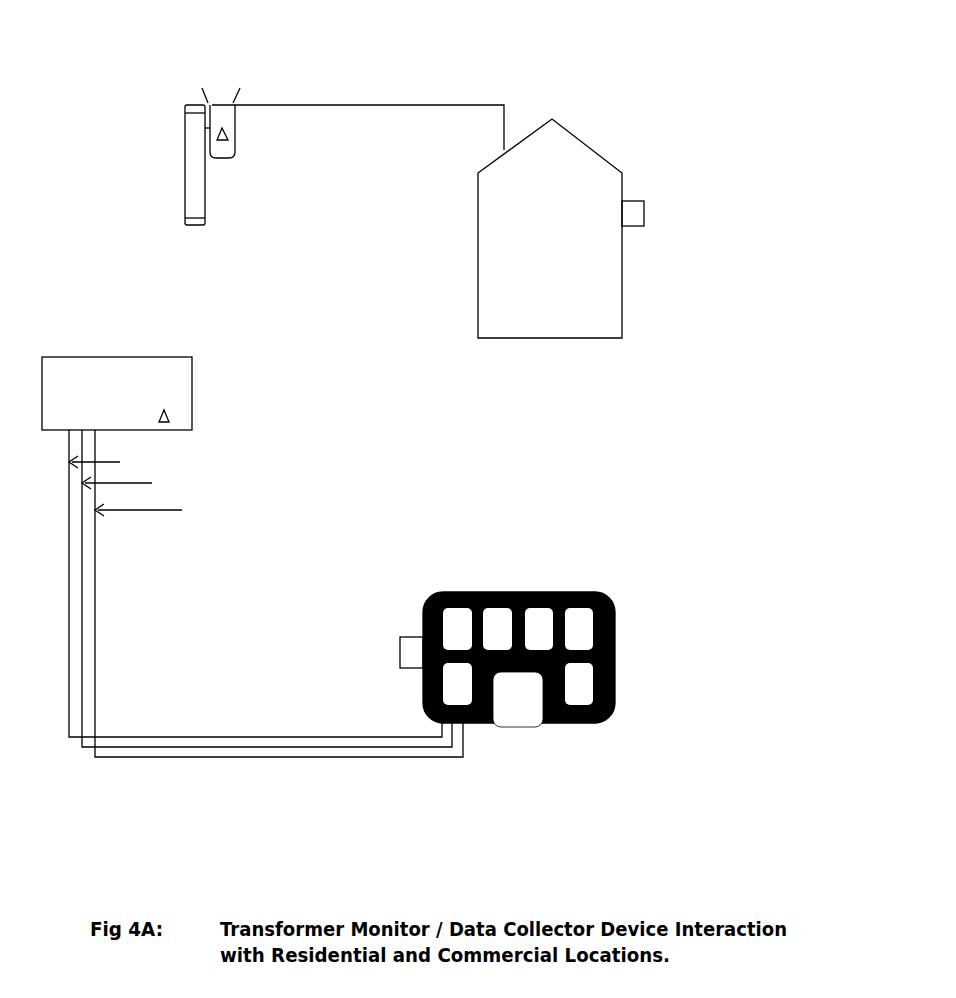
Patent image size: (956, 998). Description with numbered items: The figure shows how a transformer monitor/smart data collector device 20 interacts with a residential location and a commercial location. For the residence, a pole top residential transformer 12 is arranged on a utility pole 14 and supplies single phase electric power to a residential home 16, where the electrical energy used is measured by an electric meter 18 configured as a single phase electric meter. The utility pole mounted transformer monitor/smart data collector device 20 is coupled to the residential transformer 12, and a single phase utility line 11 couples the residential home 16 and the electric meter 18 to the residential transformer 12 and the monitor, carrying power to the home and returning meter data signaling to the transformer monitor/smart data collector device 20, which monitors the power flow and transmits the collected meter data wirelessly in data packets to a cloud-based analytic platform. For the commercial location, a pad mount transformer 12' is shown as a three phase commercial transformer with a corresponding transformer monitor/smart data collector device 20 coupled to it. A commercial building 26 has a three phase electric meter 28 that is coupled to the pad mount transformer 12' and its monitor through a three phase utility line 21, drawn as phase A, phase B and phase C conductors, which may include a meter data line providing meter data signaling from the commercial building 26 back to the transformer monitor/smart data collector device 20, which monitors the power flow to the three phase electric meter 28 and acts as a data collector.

The single phase utility line 11 is at (425, 104).
The residential transformer 12 is at (221, 83).
The pad mount transformer 12' is at (117, 363).
The utility pole 14 is at (185, 158).
The residential home 16 is at (548, 338).
The electric meter 18 is at (644, 213).
The transformer monitor/smart data collector device 20 is at (220, 138).
The three phase utility line 21 is at (181, 737).
The commercial building 26 is at (615, 646).
The three phase electric meter 28 is at (398, 654).